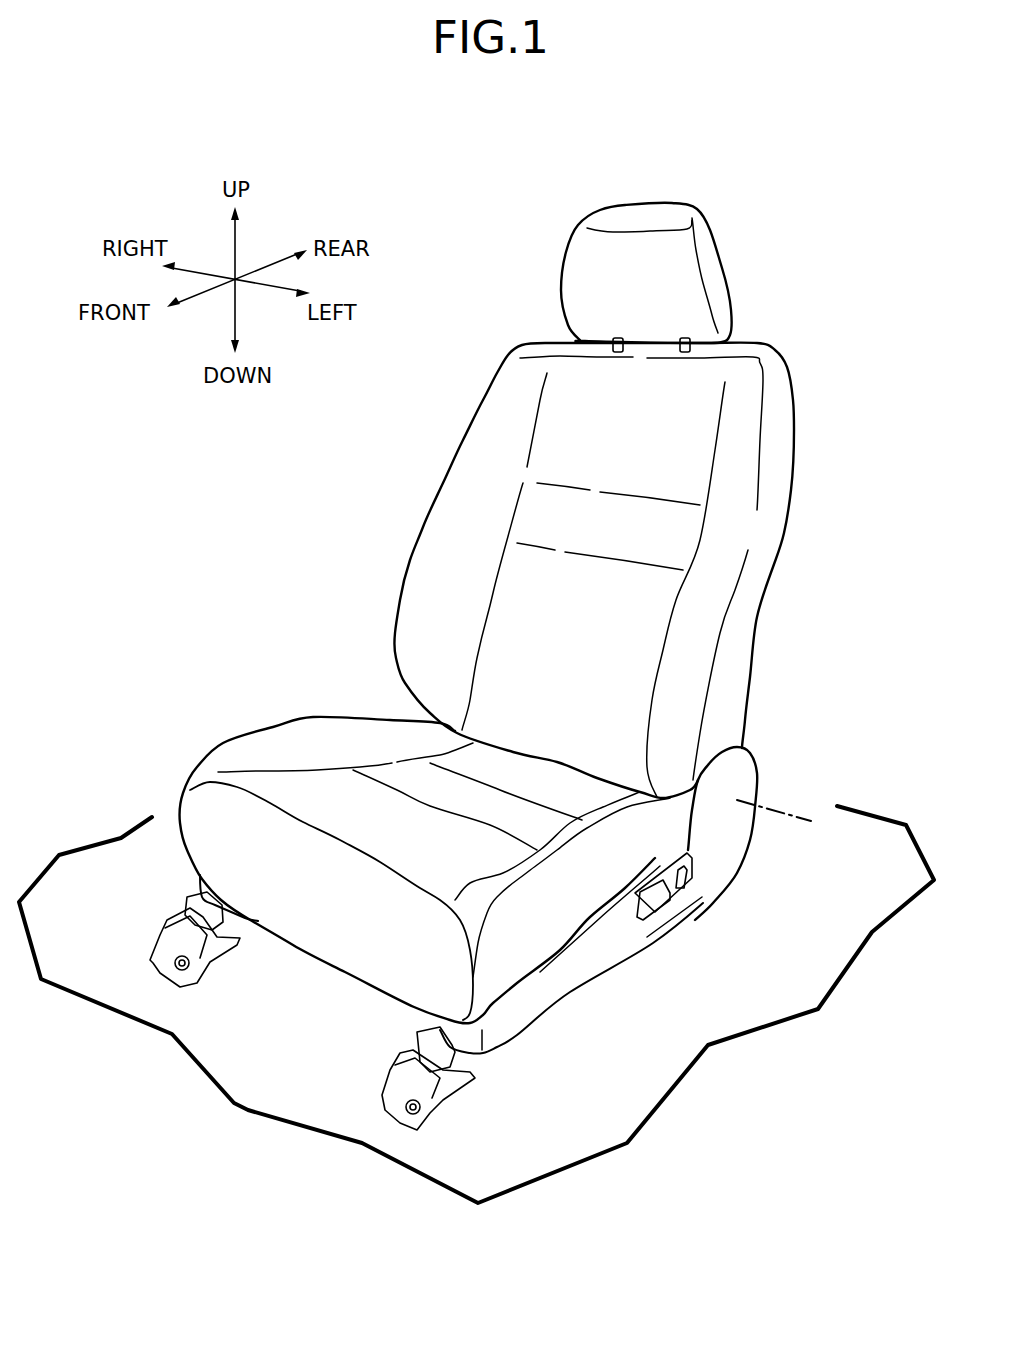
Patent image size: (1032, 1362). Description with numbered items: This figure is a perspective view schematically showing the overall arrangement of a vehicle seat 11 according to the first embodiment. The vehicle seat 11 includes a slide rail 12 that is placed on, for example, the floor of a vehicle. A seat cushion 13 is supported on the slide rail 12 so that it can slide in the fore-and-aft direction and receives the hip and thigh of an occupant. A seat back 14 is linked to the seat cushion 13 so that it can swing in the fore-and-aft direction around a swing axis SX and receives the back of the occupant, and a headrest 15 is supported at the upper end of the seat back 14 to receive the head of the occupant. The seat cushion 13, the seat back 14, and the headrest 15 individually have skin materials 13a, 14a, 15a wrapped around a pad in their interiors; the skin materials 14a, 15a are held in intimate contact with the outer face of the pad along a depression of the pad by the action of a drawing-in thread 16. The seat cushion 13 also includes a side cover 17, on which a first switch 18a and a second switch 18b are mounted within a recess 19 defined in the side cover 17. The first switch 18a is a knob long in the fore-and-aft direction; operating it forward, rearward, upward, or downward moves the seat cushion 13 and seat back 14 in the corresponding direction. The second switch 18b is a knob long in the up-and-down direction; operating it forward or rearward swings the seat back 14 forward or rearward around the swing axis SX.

The vehicle seat 11 is at (815, 392).
The slide rail 12 is at (190, 895).
The seat cushion 13 is at (441, 845).
The skin material 13a is at (327, 957).
The seat back 14 is at (591, 570).
The skin material 14a is at (753, 572).
The headrest 15 is at (645, 277).
The skin material 15a is at (717, 273).
The drawing-in thread 16 is at (267, 767).
The side cover 17 is at (734, 849).
The first switch 18a is at (661, 904).
The second switch 18b is at (689, 887).
The recess 19 is at (656, 880).
The swing axis SX is at (796, 815).